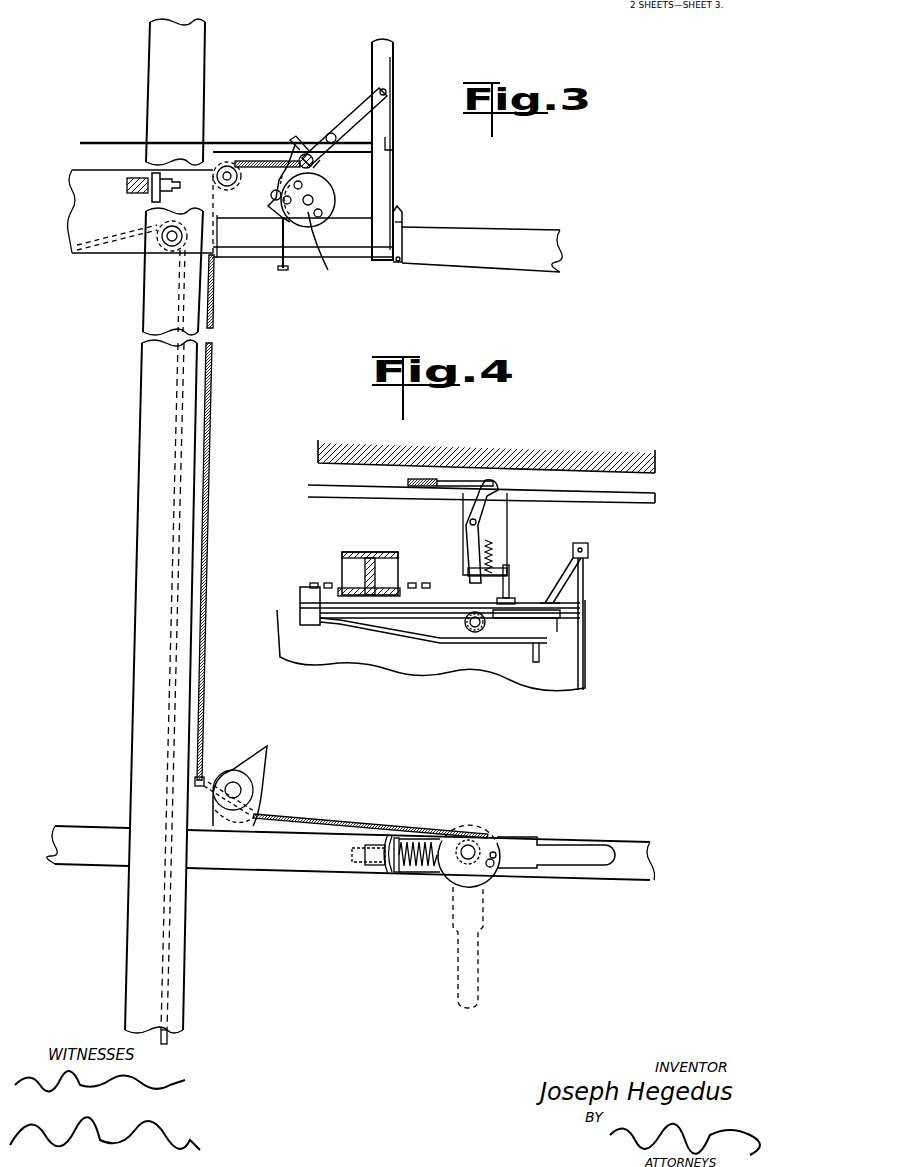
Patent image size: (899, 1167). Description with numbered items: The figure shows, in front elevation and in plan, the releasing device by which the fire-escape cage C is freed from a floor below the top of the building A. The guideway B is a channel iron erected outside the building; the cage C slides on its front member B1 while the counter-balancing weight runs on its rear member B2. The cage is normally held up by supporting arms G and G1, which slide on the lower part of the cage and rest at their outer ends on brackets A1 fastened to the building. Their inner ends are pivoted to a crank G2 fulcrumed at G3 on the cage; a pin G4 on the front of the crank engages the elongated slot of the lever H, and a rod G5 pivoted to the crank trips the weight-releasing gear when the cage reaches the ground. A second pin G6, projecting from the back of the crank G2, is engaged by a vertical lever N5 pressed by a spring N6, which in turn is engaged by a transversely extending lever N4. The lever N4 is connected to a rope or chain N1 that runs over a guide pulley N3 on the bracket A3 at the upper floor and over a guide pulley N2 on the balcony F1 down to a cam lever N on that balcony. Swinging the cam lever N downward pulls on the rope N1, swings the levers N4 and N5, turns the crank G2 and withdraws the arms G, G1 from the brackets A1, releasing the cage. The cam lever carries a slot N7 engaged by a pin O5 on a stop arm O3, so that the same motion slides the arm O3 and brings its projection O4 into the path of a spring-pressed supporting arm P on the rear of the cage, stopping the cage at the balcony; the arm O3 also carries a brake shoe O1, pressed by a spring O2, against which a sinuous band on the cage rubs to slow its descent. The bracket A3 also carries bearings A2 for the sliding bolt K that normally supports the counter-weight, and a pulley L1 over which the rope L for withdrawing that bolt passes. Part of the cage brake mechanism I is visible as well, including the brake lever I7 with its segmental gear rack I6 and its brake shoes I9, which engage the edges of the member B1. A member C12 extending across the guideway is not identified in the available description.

In FIG. 3, the guideway B is at (150, 68).
In FIG. 4, the guideway B is at (125, 947).
In FIG. 3, the cage C is at (372, 60).
In FIG. 4, the cage C is at (431, 656).
In FIG. 3, the rod C12 is at (122, 143).
In FIG. 3, the lever H is at (360, 116).
In FIG. 4, the lever H is at (541, 650).
In FIG. 4, the cam lever N is at (540, 840).
In FIG. 3, the rope or chain N1 is at (265, 160).
In FIG. 4, the rope or chain N1 is at (212, 448).
In FIG. 4, the guide pulley N2 is at (262, 770).
In FIG. 3, the guide pulley N3 is at (229, 165).
In FIG. 4, the guide pulley N3 is at (408, 482).
In FIG. 3, the transversely extending lever N4 is at (300, 172).
In FIG. 4, the transversely extending lever N4 is at (490, 528).
In FIG. 3, the vertical lever N5 is at (305, 150).
In FIG. 4, the vertical lever N5 is at (500, 572).
In FIG. 4, the spring N6 is at (492, 550).
In FIG. 4, the slot N7 is at (495, 858).
In FIG. 3, the supporting arm G is at (399, 206).
In FIG. 3, the supporting arm G1 is at (302, 196).
In FIG. 3, the crank G2 is at (330, 200).
In FIG. 3, the fulcrum G3 is at (327, 253).
In FIG. 3, the pin G4 is at (316, 162).
In FIG. 4, the pin G4 is at (505, 620).
In FIG. 3, the rod G5 is at (285, 272).
In FIG. 4, the pin G6 is at (509, 584).
In FIG. 4, the building A is at (486, 450).
In FIG. 3, the bracket A1 is at (402, 230).
In FIG. 3, the bearing A2 is at (152, 196).
In FIG. 3, the bracket A3 is at (72, 212).
In FIG. 4, the bracket A3 is at (638, 503).
In FIG. 3, the bolt K is at (180, 186).
In FIG. 4, the rope or chain L is at (170, 526).
In FIG. 3, the pulley L1 is at (168, 252).
In FIG. 4, the front member B1 is at (385, 590).
In FIG. 4, the rear member B2 is at (370, 560).
In FIG. 4, the brake mechanism I is at (330, 622).
In FIG. 4, the segmental gear rack I6 is at (310, 626).
In FIG. 4, the brake lever I7 is at (446, 603).
In FIG. 4, the brake shoe I9 is at (330, 588).
In FIG. 4, the supporting arm P is at (584, 542).
In FIG. 4, the balcony F1 is at (634, 880).
In FIG. 4, the brake shoe O1 is at (388, 877).
In FIG. 4, the spring O2 is at (414, 872).
In FIG. 4, the stop arm O3 is at (424, 832).
In FIG. 4, the projection O4 is at (352, 854).
In FIG. 4, the pin O5 is at (490, 880).